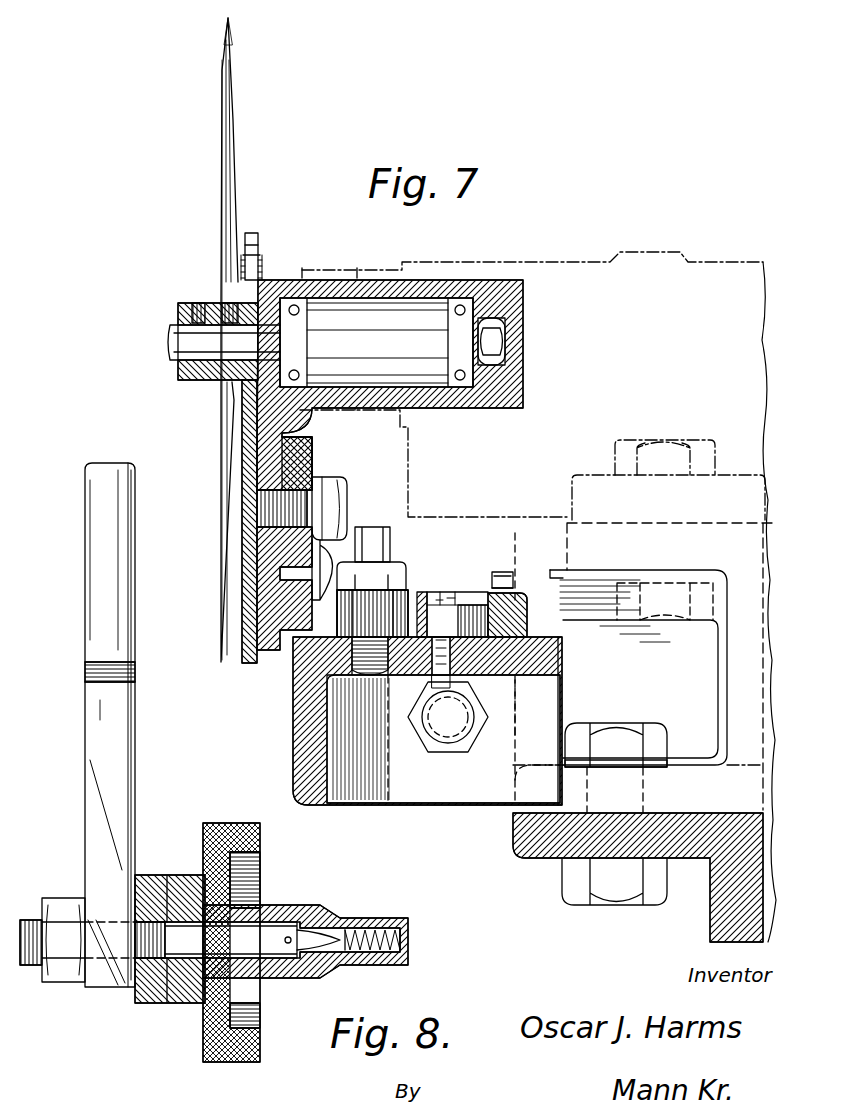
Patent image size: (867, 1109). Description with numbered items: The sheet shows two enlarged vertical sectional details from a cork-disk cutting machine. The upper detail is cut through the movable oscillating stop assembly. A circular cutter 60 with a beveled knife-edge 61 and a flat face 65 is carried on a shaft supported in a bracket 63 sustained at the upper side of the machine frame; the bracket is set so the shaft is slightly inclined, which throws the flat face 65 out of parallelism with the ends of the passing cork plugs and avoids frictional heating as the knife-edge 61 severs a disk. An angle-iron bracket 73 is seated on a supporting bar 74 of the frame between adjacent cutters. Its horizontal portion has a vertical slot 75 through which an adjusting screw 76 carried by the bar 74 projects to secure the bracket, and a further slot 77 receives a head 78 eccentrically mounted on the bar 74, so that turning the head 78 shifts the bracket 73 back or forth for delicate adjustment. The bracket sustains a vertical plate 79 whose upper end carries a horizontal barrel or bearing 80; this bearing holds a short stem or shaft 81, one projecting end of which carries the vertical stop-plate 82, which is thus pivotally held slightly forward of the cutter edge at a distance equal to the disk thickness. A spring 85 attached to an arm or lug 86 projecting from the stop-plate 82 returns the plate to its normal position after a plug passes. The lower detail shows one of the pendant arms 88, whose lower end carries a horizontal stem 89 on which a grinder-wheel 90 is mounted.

In FIG. 7, the cutter 60 is at (226, 208).
In FIG. 7, the beveled knife-edge 61 is at (229, 60).
In FIG. 7, the bracket 63 is at (580, 488).
In FIG. 7, the flat face of the cutter disk 65 is at (222, 143).
In FIG. 7, the angle-iron bracket 73 is at (313, 472).
In FIG. 7, the supporting bar 74 is at (293, 697).
In FIG. 7, the slot 75 is at (405, 607).
In FIG. 7, the adjusting screw 76 is at (393, 575).
In FIG. 7, the slot 77 is at (447, 620).
In FIG. 7, the head 78 is at (475, 592).
In FIG. 7, the vertical plate 79 is at (273, 446).
In FIG. 7, the horizontal barrel or bearing 80 is at (416, 292).
In FIG. 7, the stem or shaft 81 is at (376, 342).
In FIG. 7, the stop-plate 82 is at (246, 408).
In FIG. 7, the spring 85 is at (264, 268).
In FIG. 7, the arm or lug 86 is at (256, 236).
In FIG. 8, the arm 88 is at (128, 762).
In FIG. 8, the horizontal stem 89 is at (247, 937).
In FIG. 8, the grinder-wheel 90 is at (261, 846).